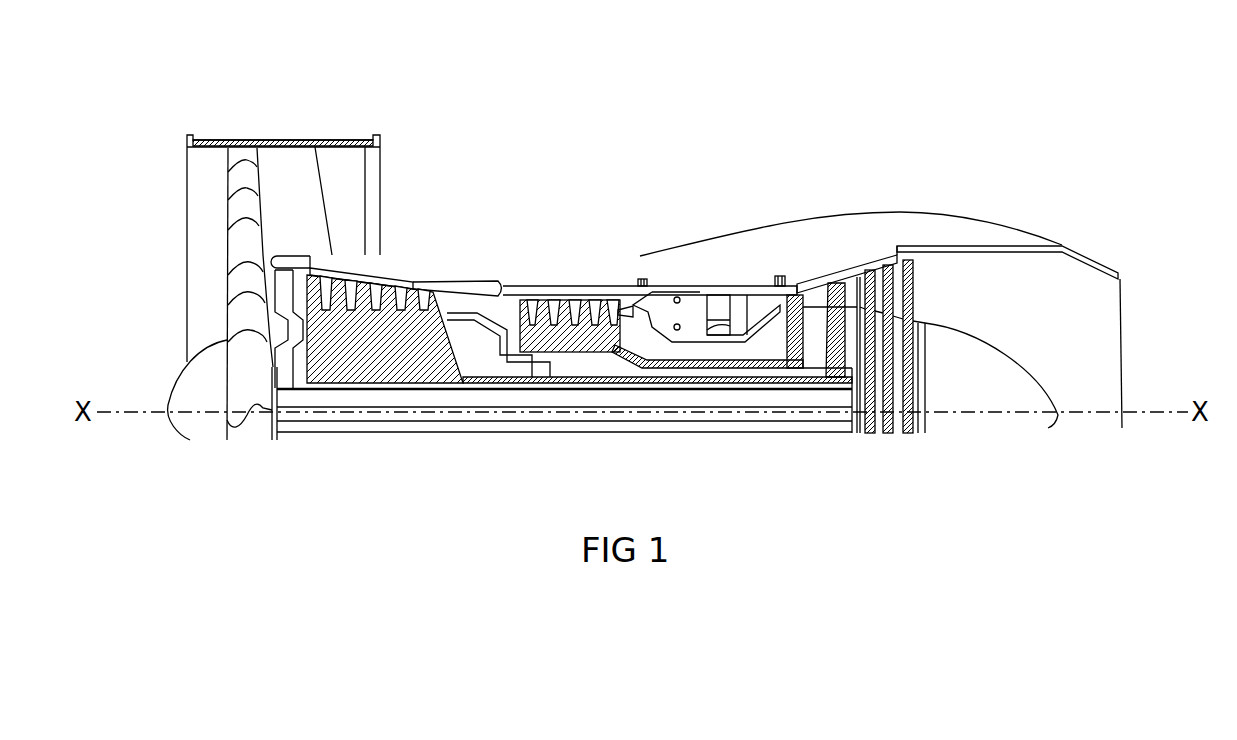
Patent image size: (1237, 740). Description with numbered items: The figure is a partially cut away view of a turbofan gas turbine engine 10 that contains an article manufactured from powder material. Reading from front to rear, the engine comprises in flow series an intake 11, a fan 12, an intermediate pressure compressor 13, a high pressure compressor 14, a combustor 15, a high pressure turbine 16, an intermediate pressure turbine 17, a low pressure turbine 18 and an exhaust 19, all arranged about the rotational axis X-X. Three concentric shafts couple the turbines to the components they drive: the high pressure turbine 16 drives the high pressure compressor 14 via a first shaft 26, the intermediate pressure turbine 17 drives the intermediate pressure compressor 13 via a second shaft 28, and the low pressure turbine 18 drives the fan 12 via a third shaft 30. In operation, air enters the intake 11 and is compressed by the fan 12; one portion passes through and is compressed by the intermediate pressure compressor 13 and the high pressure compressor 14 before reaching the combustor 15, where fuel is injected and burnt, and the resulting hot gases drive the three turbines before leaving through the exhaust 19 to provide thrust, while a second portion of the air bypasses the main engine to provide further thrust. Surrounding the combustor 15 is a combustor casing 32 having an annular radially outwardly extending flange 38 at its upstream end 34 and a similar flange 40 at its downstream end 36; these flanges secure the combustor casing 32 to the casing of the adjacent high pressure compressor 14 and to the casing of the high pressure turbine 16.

The turbofan gas turbine engine 10 is at (500, 188).
The intake 11 is at (168, 272).
The fan 12 is at (242, 165).
The intermediate pressure compressor 13 is at (385, 318).
The high pressure compressor 14 is at (540, 298).
The combustor 15 is at (718, 284).
The high pressure turbine 16 is at (797, 284).
The intermediate pressure turbine 17 is at (840, 282).
The low pressure turbine 18 is at (893, 288).
The exhaust 19 is at (1107, 350).
The first shaft 26 is at (740, 372).
The second shaft 28 is at (510, 385).
The third shaft 30 is at (420, 438).
The combustor casing 32 is at (678, 287).
The upstream end 34 is at (648, 293).
The downstream end 36 is at (768, 282).
The flange 38 is at (635, 280).
The flange 40 is at (778, 274).